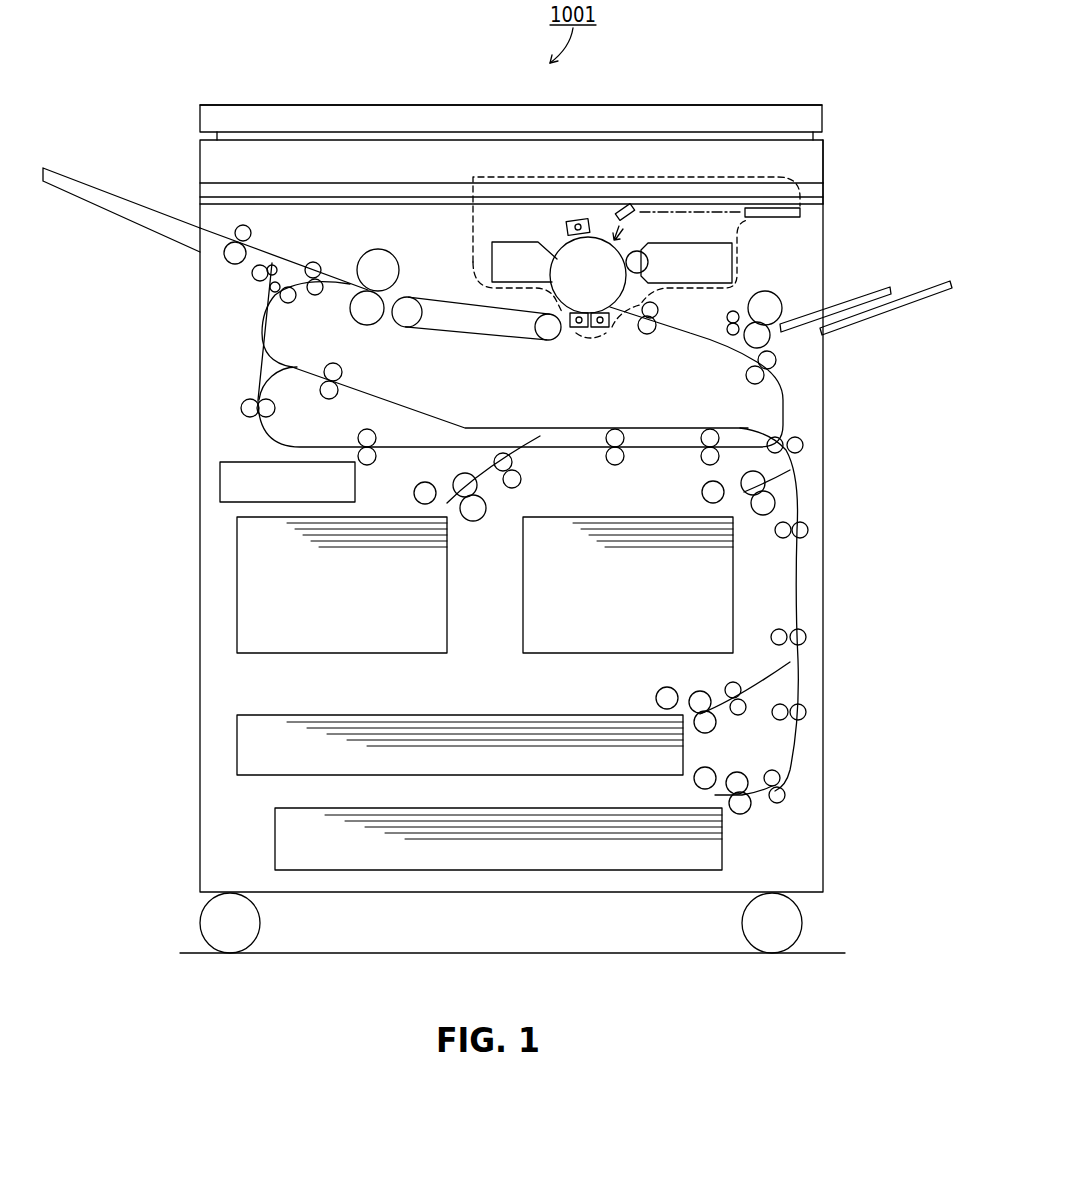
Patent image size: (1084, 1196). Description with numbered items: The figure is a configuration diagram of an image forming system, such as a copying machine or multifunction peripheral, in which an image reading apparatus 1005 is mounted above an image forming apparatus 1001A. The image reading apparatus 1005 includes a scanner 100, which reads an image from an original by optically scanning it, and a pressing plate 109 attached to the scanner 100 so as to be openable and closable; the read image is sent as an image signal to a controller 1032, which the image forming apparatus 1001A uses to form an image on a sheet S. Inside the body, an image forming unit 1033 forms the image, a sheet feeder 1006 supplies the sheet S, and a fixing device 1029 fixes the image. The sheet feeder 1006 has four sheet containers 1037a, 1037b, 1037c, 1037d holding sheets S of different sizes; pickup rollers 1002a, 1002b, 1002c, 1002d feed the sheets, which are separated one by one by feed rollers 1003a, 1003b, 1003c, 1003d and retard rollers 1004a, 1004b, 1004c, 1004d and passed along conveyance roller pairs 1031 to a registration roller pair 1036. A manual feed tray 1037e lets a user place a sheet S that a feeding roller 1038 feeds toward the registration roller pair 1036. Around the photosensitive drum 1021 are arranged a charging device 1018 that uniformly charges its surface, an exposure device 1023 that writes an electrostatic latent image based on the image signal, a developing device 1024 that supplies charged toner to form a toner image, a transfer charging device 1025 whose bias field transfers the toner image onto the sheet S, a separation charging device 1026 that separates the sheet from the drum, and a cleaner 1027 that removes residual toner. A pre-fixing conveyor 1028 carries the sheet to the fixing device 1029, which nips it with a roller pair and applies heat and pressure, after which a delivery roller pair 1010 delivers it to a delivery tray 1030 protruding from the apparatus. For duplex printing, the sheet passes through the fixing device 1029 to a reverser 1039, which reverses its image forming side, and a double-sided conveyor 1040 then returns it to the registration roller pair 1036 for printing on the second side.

The image forming apparatus 1001A is at (833, 218).
The image reading apparatus 1005 is at (873, 53).
The pressing plate 109 is at (818, 105).
The scanner 100 is at (822, 158).
The sheet feeder 1006 is at (808, 410).
The delivery roller pair 1010 is at (236, 266).
The charging device 1018 is at (582, 220).
The photosensitive drum 1021 is at (560, 250).
The exposure device 1023 is at (772, 218).
The developing device 1024 is at (742, 260).
The transfer charging device 1025 is at (600, 330).
The separation charging device 1026 is at (578, 330).
The cleaner 1027 is at (493, 258).
The pre-fixing conveyor 1028 is at (452, 300).
The fixing device 1029 is at (366, 252).
The delivery tray 1030 is at (80, 200).
The conveyance roller pairs 1031 is at (805, 445).
The controller 1032 is at (220, 480).
The image forming unit 1033 is at (478, 178).
The registration roller pair 1036 is at (655, 335).
The sheet container 1037a is at (275, 826).
The sheet container 1037b is at (237, 735).
The sheet container 1037c is at (237, 552).
The sheet container 1037d is at (760, 590).
The manual feed tray 1037e is at (905, 306).
The feeding roller 1038 is at (783, 300).
The reverser 1039 is at (390, 398).
The double-sided conveyor 1040 is at (262, 437).
The pickup roller 1002a is at (694, 781).
The pickup roller 1002b is at (655, 698).
The pickup roller 1002c is at (414, 493).
The pickup roller 1002d is at (704, 490).
The feed roller 1003a is at (742, 776).
The feed roller 1003b is at (692, 692).
The feed roller 1003c is at (455, 483).
The feed roller 1003d is at (767, 483).
The retard roller 1004a is at (748, 813).
The retard roller 1004b is at (717, 722).
The retard roller 1004c is at (474, 522).
The retard roller 1004d is at (762, 516).
The sheet S is at (595, 516).